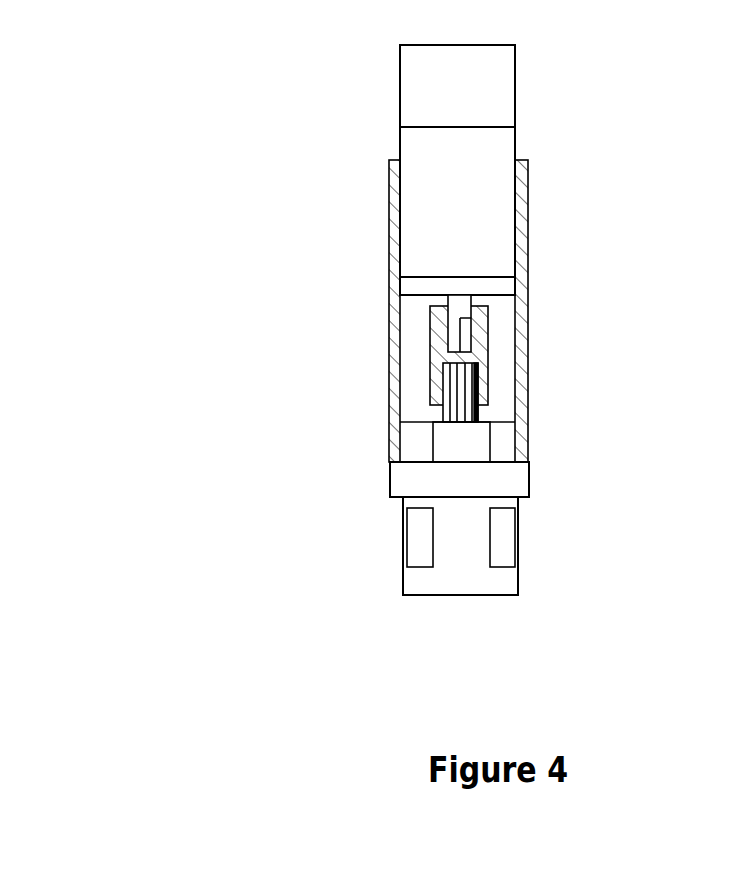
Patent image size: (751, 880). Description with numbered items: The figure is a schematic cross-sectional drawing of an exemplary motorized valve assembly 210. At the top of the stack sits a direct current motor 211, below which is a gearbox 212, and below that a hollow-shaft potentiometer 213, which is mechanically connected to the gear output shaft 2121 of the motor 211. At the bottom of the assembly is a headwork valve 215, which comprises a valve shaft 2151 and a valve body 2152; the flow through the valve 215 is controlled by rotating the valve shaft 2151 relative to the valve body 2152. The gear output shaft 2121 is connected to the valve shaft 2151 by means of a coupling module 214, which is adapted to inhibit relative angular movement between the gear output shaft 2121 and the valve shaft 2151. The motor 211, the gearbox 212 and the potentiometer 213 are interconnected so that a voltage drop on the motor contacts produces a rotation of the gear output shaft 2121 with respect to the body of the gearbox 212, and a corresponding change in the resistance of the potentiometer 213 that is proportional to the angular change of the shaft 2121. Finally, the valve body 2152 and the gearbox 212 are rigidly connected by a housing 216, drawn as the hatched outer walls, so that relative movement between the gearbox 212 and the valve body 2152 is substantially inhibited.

The motorized valve assembly 210 is at (240, 202).
The direct current (DC) motor 211 is at (457, 86).
The gearbox 212 is at (457, 202).
The hollow-shaft potentiometer 213 is at (460, 287).
The coupling module 214 is at (480, 352).
The headwork valve 215 is at (465, 540).
The housing 216 is at (520, 302).
The gear output shaft 2121 is at (460, 306).
The valve shaft 2151 is at (473, 398).
The valve body 2152 is at (463, 447).